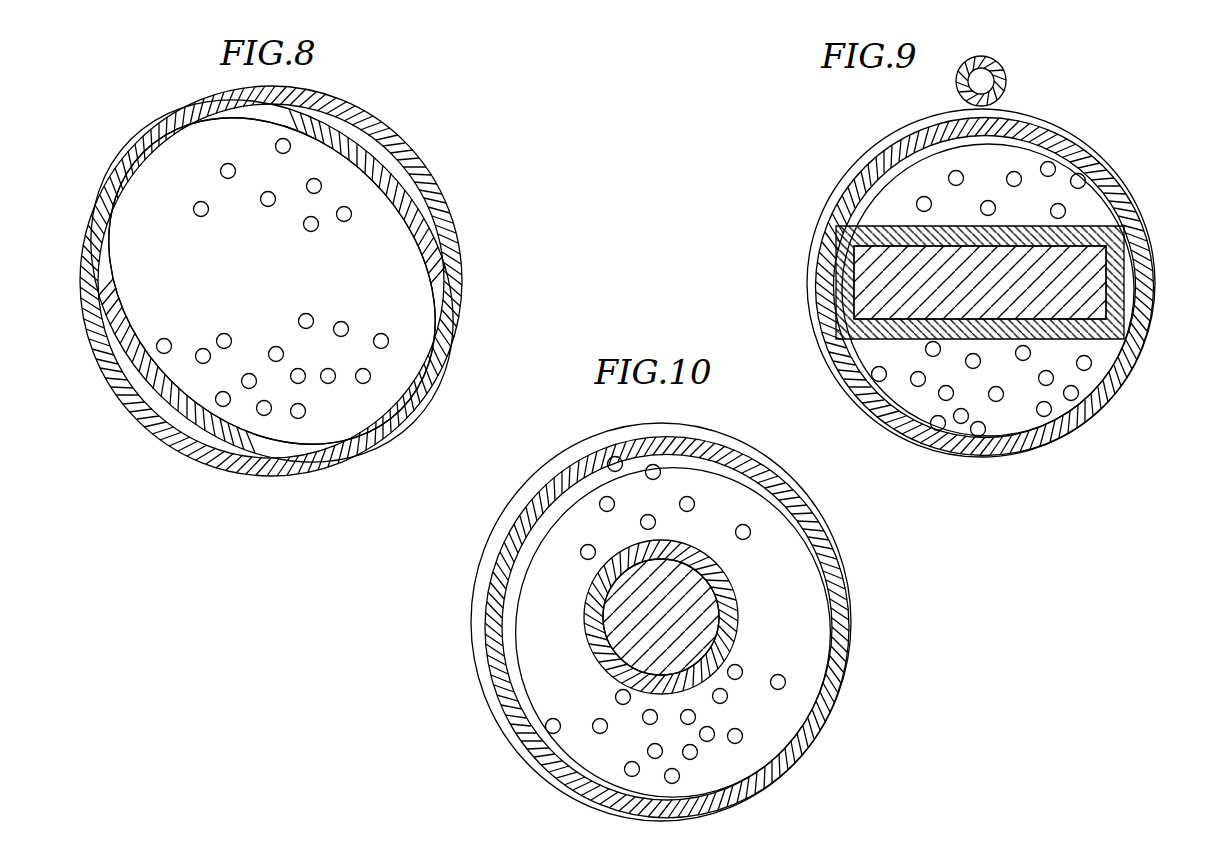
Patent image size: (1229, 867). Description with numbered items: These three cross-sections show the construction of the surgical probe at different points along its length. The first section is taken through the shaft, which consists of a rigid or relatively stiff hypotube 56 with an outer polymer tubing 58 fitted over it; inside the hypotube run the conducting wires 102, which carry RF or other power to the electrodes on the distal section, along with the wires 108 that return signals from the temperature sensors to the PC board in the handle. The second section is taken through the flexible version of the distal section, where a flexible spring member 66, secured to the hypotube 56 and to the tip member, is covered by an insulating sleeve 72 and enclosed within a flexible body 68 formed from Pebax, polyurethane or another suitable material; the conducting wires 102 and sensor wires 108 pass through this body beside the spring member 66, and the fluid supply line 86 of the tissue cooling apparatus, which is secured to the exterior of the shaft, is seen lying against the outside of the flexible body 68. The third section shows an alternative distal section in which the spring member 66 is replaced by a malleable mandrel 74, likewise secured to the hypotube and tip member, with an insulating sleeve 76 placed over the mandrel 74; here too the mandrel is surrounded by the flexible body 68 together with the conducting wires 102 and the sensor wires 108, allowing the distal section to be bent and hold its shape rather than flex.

In FIG. 8, the hypotube 56 is at (193, 130).
In FIG. 8, the outer polymer tubing 58 is at (420, 383).
In FIG. 8, the conducting wires 102 is at (320, 150).
In FIG. 9, the conducting wires 102 is at (945, 150).
In FIG. 10, the conducting wires 102 is at (726, 490).
In FIG. 8, the wires 108 is at (190, 383).
In FIG. 9, the wires 108 is at (1017, 417).
In FIG. 10, the wires 108 is at (765, 715).
In FIG. 9, the flexible body 68 is at (1070, 135).
In FIG. 10, the flexible body 68 is at (537, 485).
In FIG. 9, the fluid supply line 86 is at (995, 57).
In FIG. 9, the insulating sleeve 72 is at (843, 268).
In FIG. 9, the flexible spring member 66 is at (1083, 278).
In FIG. 10, the malleable mandrel 74 is at (695, 591).
In FIG. 10, the insulating sleeve 76 is at (590, 642).